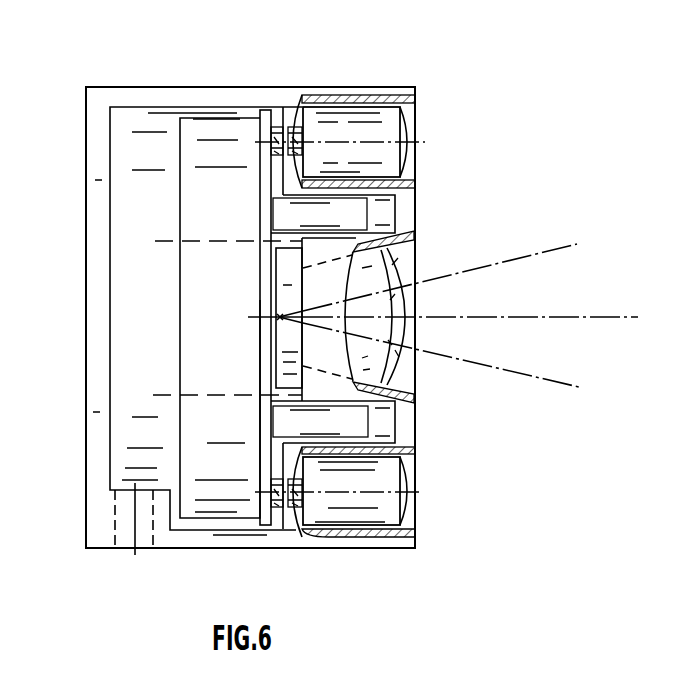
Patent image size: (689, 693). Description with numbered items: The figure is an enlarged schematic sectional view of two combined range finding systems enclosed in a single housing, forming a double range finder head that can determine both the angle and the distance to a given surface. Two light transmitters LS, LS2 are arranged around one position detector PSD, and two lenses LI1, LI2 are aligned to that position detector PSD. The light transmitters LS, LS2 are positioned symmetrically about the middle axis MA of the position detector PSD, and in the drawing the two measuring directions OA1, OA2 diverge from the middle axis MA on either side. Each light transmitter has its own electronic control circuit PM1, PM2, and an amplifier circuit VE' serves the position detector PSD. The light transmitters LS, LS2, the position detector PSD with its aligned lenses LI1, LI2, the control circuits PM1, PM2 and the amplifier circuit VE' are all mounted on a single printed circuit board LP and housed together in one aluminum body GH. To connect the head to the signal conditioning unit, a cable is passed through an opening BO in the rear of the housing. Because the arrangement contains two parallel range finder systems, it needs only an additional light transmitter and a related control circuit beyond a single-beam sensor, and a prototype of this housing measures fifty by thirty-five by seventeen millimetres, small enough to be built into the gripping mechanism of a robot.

The aluminum body GH is at (158, 122).
The light transmitter LS2 is at (350, 120).
The electronic control circuit PM2 is at (220, 218).
The position detector PSD is at (290, 258).
The amplifier circuit VE' is at (245, 308).
The lens LI2 is at (390, 280).
The second optical axis OA2 is at (558, 252).
The middle axis MA is at (628, 318).
The first optical axis OA1 is at (570, 388).
The lens LI1 is at (398, 362).
The electronic control circuit PM1 is at (220, 409).
The opening BO is at (125, 535).
The printed circuit board LP is at (268, 515).
The light transmitter LS is at (345, 512).